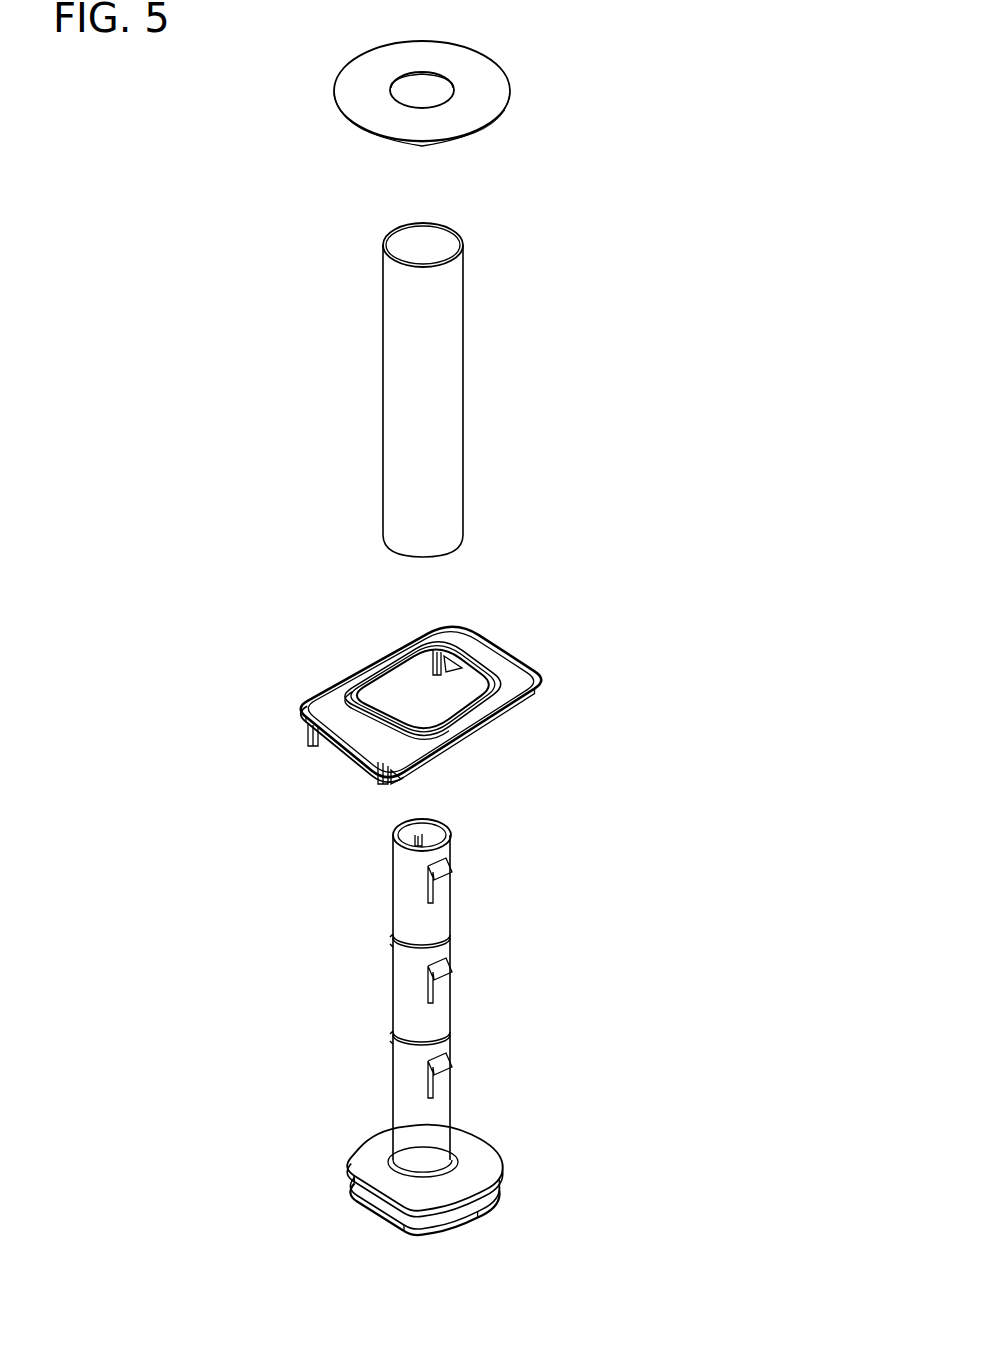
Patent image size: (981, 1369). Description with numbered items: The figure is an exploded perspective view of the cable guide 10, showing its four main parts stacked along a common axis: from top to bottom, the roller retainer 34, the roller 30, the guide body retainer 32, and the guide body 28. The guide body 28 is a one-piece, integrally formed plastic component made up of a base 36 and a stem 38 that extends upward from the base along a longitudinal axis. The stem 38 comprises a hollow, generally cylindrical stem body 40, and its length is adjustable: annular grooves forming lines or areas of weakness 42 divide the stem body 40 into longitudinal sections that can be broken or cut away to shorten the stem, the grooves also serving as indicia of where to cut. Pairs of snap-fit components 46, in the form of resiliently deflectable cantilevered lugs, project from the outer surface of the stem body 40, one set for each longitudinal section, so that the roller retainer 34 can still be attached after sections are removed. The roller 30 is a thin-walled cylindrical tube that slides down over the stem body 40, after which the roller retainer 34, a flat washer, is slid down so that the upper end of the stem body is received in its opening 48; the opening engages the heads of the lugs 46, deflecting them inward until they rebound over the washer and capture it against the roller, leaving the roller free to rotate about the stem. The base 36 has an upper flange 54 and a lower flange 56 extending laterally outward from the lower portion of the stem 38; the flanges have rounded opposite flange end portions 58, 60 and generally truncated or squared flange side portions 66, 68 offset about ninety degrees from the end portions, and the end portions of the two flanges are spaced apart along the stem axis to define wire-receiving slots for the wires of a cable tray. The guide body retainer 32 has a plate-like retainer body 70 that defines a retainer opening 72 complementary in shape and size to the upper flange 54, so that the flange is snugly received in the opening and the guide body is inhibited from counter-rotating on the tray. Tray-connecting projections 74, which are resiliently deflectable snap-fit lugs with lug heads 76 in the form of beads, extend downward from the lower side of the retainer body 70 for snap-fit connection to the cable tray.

The cable guide 10 is at (655, 72).
The guide body 28 is at (493, 1060).
The roller 30 is at (447, 352).
The guide body retainer 32 is at (461, 698).
The roller retainer 34 is at (446, 73).
The base 36 is at (477, 1193).
The stem 38 is at (400, 989).
The stem body 40 is at (442, 920).
The lines or areas of weakness 42 is at (403, 938).
The snap-fit components 46 is at (443, 888).
The opening 48 is at (416, 93).
The upper flange 54 is at (427, 1156).
The lower flange 56 is at (436, 1242).
The flange end portions 58 is at (357, 1152).
The flange end portions 60 is at (483, 1225).
The flange side portions 66 is at (487, 1153).
The flange side portions 68 is at (387, 1223).
The retainer body 70 is at (323, 695).
The retainer opening 72 is at (386, 702).
The tray-connecting projections 74 is at (463, 670).
The lug heads 76 is at (418, 660).